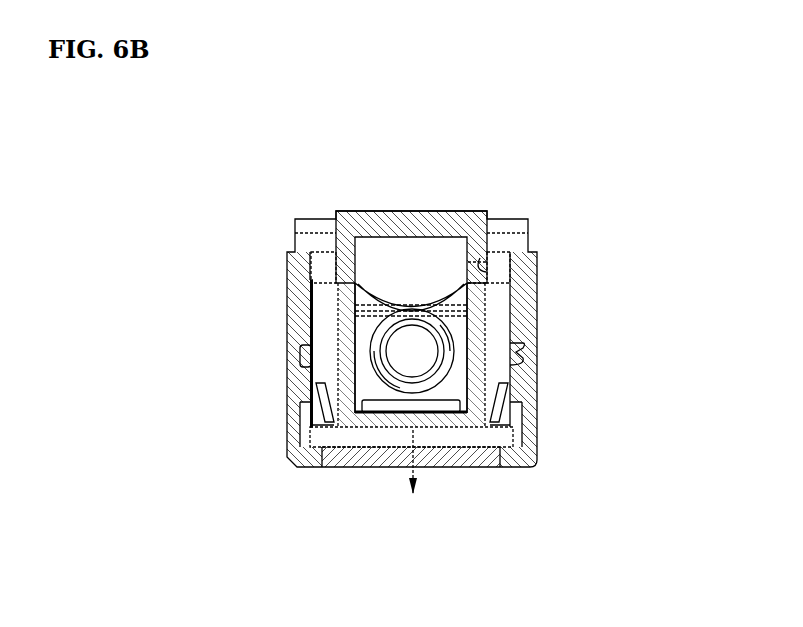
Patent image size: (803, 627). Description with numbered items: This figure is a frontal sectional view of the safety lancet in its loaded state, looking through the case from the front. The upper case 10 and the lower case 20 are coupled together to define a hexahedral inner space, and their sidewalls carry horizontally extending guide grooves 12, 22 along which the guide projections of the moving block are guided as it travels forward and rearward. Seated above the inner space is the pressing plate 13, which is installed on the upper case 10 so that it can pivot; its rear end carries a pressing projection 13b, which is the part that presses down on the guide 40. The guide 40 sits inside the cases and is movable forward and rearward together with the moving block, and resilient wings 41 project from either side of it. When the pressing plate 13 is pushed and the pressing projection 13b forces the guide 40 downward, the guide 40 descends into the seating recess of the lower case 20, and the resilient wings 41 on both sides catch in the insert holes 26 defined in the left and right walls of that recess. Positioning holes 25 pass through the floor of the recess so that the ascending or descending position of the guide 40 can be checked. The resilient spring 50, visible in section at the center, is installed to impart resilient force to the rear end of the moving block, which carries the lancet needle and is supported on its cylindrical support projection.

The upper case 10 is at (292, 300).
The guide groove 12 is at (516, 352).
The pressing plate 13 is at (416, 222).
The pressing projection 13b is at (487, 262).
The lower case 20 is at (292, 398).
The guide groove 22 is at (523, 360).
The positioning hole 25 is at (312, 455).
The insert hole 26 is at (512, 432).
The guide 40 is at (478, 308).
The resilient wing 41 is at (500, 403).
The resilient spring 50 is at (377, 352).